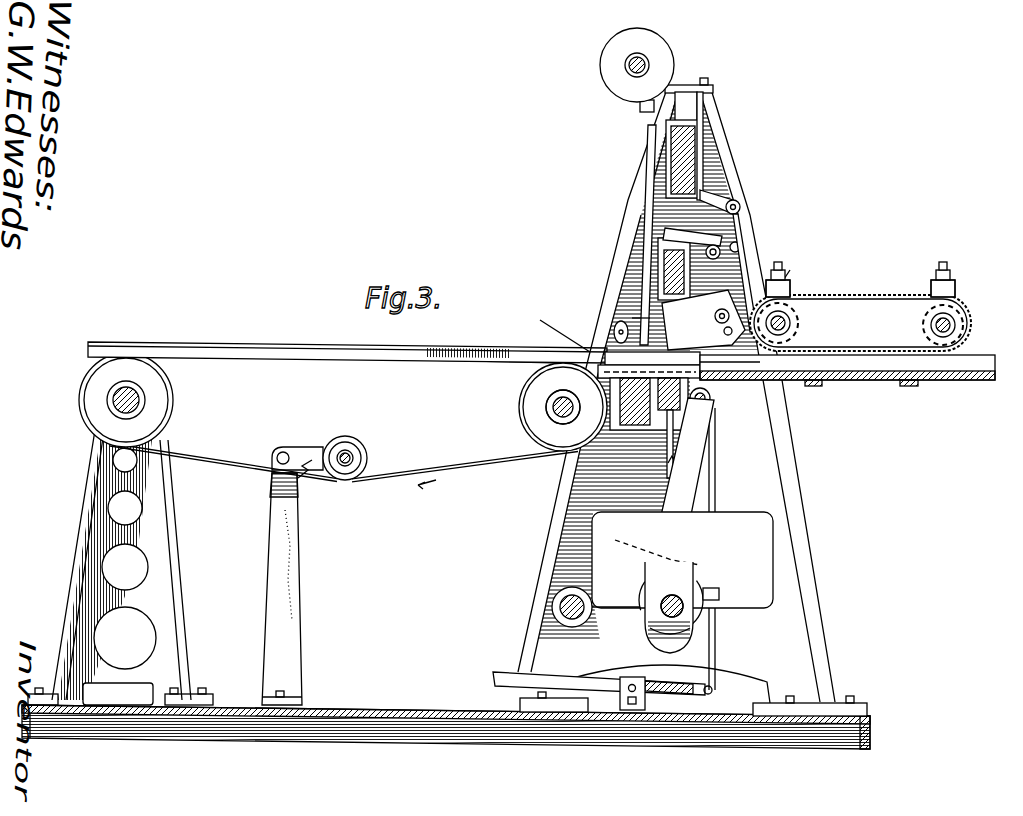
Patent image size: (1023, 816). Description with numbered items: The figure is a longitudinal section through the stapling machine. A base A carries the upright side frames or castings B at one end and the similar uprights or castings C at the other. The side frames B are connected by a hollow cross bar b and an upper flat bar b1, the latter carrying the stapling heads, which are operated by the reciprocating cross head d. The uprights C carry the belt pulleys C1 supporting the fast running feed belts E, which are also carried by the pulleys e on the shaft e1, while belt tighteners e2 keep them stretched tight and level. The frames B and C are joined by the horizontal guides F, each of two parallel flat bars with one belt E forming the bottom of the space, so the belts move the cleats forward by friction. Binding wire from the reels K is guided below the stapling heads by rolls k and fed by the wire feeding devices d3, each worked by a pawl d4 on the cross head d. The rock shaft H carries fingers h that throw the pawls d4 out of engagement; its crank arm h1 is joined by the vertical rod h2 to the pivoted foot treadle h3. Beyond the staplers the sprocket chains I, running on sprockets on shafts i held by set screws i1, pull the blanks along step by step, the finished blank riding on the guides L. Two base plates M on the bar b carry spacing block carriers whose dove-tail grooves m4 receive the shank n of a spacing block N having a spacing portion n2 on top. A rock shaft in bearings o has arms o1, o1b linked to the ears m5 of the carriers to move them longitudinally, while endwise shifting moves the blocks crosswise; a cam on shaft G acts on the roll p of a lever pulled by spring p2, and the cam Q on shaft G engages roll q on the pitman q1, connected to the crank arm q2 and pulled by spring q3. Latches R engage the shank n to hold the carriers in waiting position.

The base A is at (355, 705).
The upright side frames B is at (797, 515).
The uprights C is at (163, 578).
The belt pulleys C1 is at (165, 412).
The feed belts E is at (340, 366).
The guides F is at (297, 345).
The pulleys e is at (545, 406).
The shaft e1 is at (553, 402).
The belt tighteners e2 is at (350, 447).
The reels K is at (646, 52).
The cross head d is at (685, 160).
The wire feed pawl d4 is at (740, 208).
The wire feeding devices d3 is at (790, 268).
The rock shaft H is at (742, 246).
The fingers h is at (708, 240).
The crank arm h1 is at (722, 252).
The vertical rod h2 is at (718, 484).
The foot treadle h3 is at (658, 700).
The hollow cross bar b is at (665, 440).
The upper flat bar b1 is at (640, 282).
The roll p is at (657, 255).
The spring p2 is at (684, 575).
The rolls k is at (612, 330).
The spacing portion n2 is at (630, 318).
The shank n is at (720, 594).
The spacing block N is at (618, 356).
The base plates M is at (600, 368).
The dove-tail grooves m4 is at (605, 352).
The ears m5 is at (736, 355).
The bearings o is at (696, 320).
The arms o1 is at (715, 316).
The cam roller o1b is at (786, 384).
The guides L is at (958, 376).
The sprocket chains I is at (876, 298).
The shafts i is at (790, 318).
The set screws i1 is at (786, 272).
The roll q is at (652, 542).
The pitman q1 is at (700, 492).
The crank arm q2 is at (712, 396).
The spring q3 is at (665, 462).
The latches R is at (640, 598).
The shaft G is at (685, 608).
The cam Q is at (665, 650).